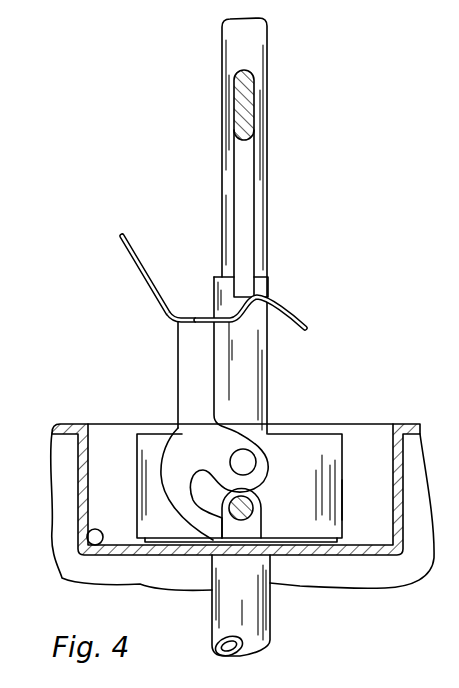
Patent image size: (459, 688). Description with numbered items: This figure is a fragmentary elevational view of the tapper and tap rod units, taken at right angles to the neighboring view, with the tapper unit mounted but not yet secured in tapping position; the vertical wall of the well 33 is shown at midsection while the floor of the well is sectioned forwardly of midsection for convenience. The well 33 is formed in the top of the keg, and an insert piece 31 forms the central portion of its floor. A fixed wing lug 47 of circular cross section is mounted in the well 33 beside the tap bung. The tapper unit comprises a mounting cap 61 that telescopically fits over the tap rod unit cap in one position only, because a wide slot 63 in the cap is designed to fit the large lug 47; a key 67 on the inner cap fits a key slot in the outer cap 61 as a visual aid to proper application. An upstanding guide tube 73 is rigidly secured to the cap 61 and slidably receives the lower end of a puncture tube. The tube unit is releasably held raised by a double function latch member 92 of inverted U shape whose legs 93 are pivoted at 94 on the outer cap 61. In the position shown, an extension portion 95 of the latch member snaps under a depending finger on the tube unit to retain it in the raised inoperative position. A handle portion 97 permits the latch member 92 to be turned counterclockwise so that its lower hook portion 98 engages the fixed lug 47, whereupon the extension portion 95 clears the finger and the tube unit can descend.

The insert piece 31 is at (88, 538).
The well 33 is at (393, 440).
The fixed wing lug 47 is at (226, 518).
The mounting cap 61 is at (304, 479).
The wide slot 63 is at (263, 530).
The key 67 is at (343, 508).
The guide tube 73 is at (249, 379).
The latch member 92 is at (160, 316).
The legs 93 is at (178, 377).
The pivot 94 is at (244, 461).
The extension portion 95 is at (299, 308).
The handle portion 97 is at (139, 266).
The lower hook portion 98 is at (193, 514).